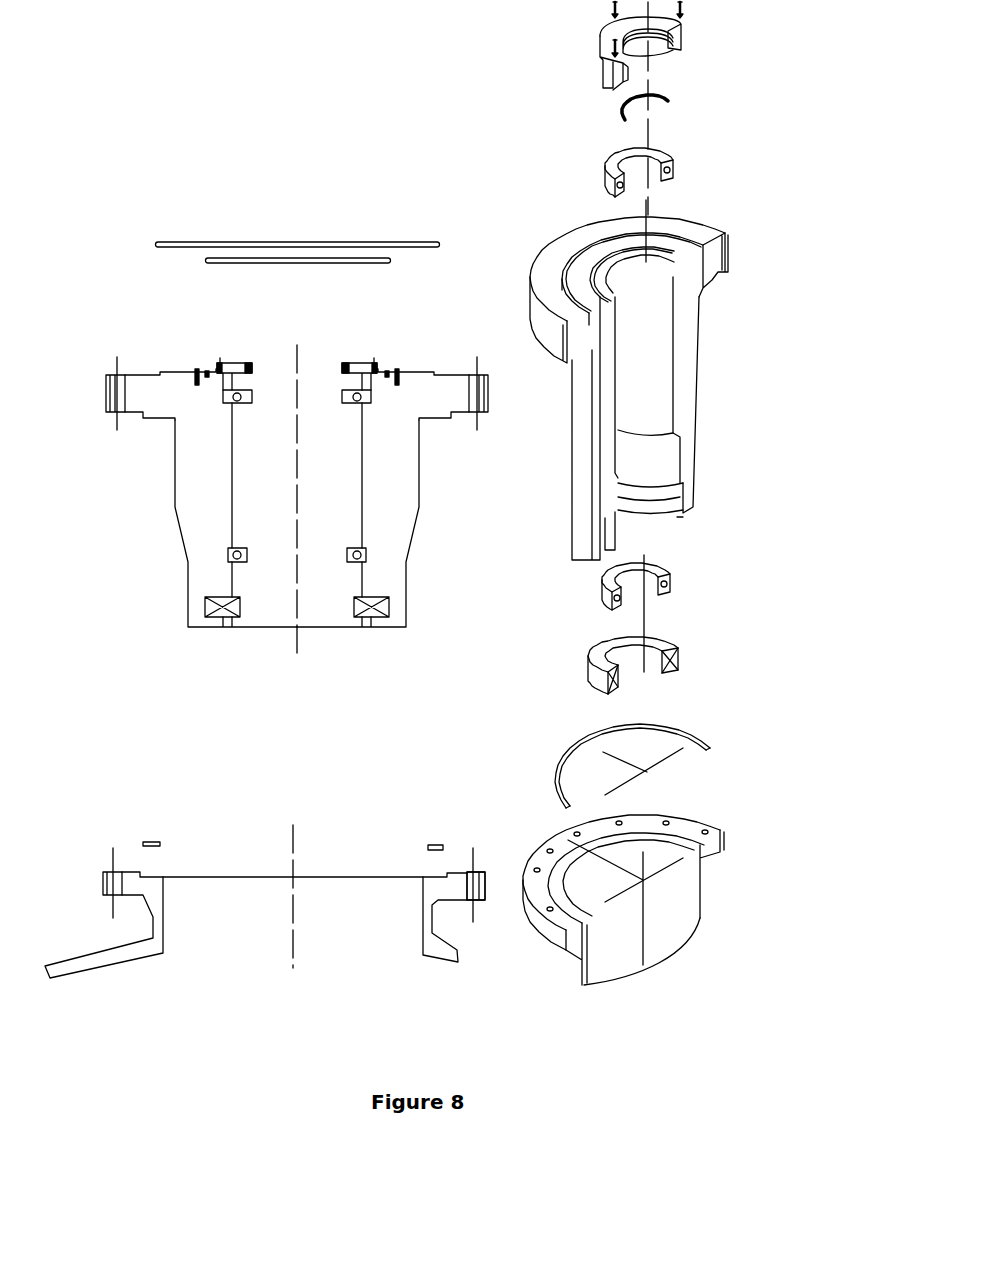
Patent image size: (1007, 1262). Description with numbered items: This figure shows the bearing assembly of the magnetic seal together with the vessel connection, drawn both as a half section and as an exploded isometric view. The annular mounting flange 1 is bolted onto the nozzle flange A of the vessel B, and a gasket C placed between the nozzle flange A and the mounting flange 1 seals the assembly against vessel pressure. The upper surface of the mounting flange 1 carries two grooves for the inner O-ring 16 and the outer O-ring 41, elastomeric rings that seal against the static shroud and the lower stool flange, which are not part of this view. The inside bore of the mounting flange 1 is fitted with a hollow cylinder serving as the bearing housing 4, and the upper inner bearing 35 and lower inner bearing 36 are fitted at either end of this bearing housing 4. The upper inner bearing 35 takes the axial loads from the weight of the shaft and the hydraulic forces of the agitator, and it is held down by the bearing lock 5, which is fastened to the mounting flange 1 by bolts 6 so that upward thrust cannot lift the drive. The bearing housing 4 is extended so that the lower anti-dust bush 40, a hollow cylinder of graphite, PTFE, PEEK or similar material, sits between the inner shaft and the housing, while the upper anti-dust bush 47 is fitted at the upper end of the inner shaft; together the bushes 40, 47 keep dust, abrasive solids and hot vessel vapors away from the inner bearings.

The mounting flange 1 is at (172, 373).
The bearing housing 4 is at (418, 473).
The bearing lock 5 is at (227, 362).
The bolts 6 is at (372, 360).
The inner O-ring 16 is at (208, 258).
The upper inner bearing 35 is at (363, 405).
The lower inner bearing 36 is at (363, 562).
The lower anti-dust bush 40 is at (240, 617).
The outer O-ring 41 is at (437, 244).
The upper anti-dust bush 47 is at (253, 367).
The nozzle flange A is at (558, 833).
The vessel B is at (435, 932).
The gasket C is at (152, 837).